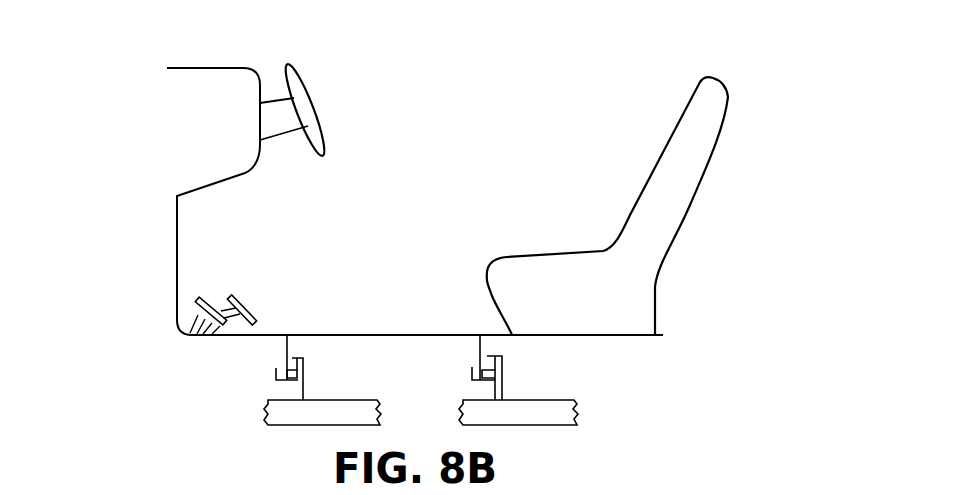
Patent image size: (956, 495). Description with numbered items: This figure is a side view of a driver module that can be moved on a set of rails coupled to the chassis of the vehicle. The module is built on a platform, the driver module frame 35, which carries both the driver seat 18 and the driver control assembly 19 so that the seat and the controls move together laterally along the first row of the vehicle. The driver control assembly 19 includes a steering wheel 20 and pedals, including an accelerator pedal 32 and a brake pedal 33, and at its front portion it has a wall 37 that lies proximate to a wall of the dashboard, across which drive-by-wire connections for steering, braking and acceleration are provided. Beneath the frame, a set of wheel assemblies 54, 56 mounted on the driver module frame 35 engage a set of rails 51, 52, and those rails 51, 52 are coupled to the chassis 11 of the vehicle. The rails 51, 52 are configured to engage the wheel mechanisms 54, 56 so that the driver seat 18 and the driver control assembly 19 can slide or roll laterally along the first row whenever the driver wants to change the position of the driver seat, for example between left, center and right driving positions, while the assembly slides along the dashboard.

The chassis 11 is at (285, 428).
The driver seat 18 is at (718, 127).
The driver control assembly 19 is at (327, 46).
The steering wheel 20 is at (317, 106).
The accelerator pedal 32 is at (233, 298).
The accelerator pedal 33 is at (210, 298).
The driver module frame 35 is at (380, 334).
The wall 37 is at (178, 216).
The rail 51 is at (309, 381).
The rail 52 is at (504, 381).
The wheel assembly 54 is at (291, 342).
The wheel assembly 56 is at (486, 343).